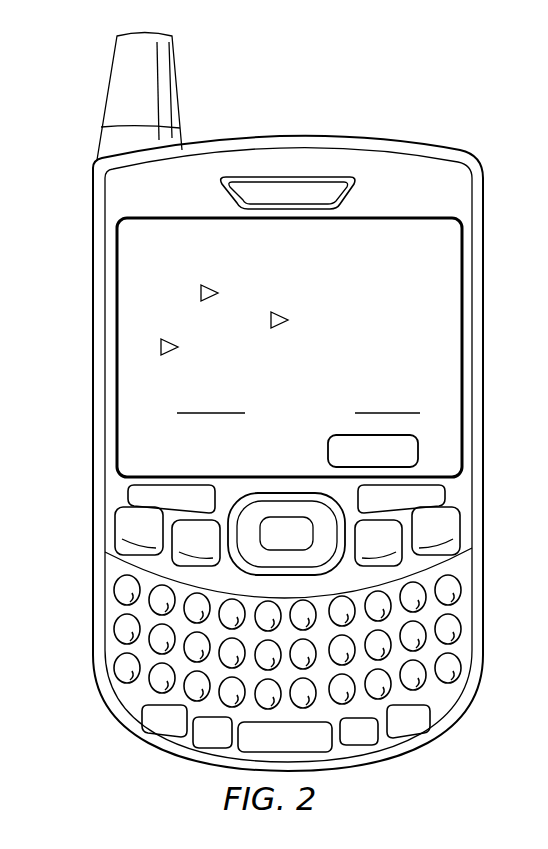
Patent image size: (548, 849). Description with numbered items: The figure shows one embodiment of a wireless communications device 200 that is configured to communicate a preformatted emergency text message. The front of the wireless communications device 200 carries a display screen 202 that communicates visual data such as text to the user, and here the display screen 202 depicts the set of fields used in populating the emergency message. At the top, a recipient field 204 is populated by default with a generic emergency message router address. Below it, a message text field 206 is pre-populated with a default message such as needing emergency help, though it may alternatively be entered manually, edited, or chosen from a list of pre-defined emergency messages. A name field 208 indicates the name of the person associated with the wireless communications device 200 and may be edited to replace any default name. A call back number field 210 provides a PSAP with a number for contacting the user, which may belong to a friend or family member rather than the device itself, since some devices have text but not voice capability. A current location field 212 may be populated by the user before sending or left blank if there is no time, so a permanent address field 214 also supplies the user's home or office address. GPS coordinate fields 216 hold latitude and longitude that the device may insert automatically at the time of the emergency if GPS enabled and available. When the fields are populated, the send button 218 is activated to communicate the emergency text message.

The wireless communications device 200 is at (353, 142).
The display screen 202 is at (205, 460).
The recipient field 204 is at (118, 241).
The message text field 206 is at (118, 270).
The name field 208 is at (118, 298).
The call back number field 210 is at (118, 317).
The current location field 212 is at (118, 345).
The permanent address field 214 is at (118, 373).
The GPS coordinate fields 216 is at (118, 400).
The send button 218 is at (328, 452).